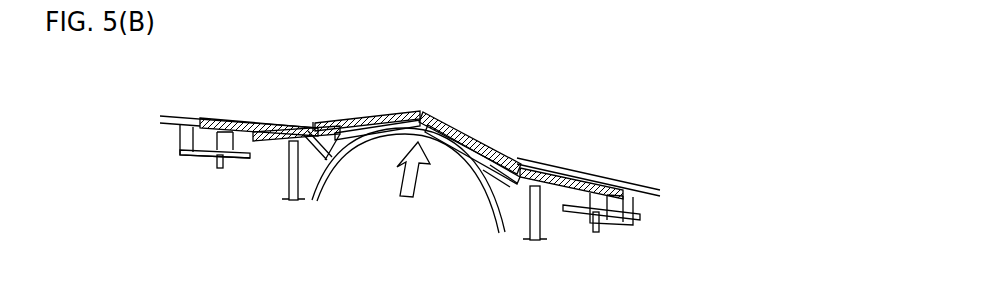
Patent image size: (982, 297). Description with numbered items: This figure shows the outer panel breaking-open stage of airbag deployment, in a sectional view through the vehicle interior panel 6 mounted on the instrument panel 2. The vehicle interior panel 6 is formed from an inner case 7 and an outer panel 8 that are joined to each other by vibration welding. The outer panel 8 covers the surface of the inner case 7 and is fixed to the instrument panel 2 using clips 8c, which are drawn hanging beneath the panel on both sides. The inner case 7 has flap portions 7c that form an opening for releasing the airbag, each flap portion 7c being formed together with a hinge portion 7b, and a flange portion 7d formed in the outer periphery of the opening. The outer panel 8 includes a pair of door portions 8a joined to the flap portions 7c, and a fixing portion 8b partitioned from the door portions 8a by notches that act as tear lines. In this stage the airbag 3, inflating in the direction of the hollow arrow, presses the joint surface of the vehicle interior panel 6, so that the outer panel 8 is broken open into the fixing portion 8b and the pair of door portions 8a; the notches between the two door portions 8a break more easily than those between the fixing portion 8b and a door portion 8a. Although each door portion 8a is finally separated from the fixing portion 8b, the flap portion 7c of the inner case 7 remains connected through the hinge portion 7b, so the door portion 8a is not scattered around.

The instrument panel 2 is at (177, 116).
The airbag 3 is at (392, 128).
The vehicle interior panel 6 is at (299, 104).
The inner case 7 is at (408, 162).
The hinge portion 7b is at (331, 157).
The flap portion 7c is at (442, 116).
The flange portion 7d is at (278, 131).
The outer panel 8 is at (588, 172).
The door portion 8a is at (372, 126).
The fixing portion 8b is at (250, 126).
The clip 8c is at (200, 152).